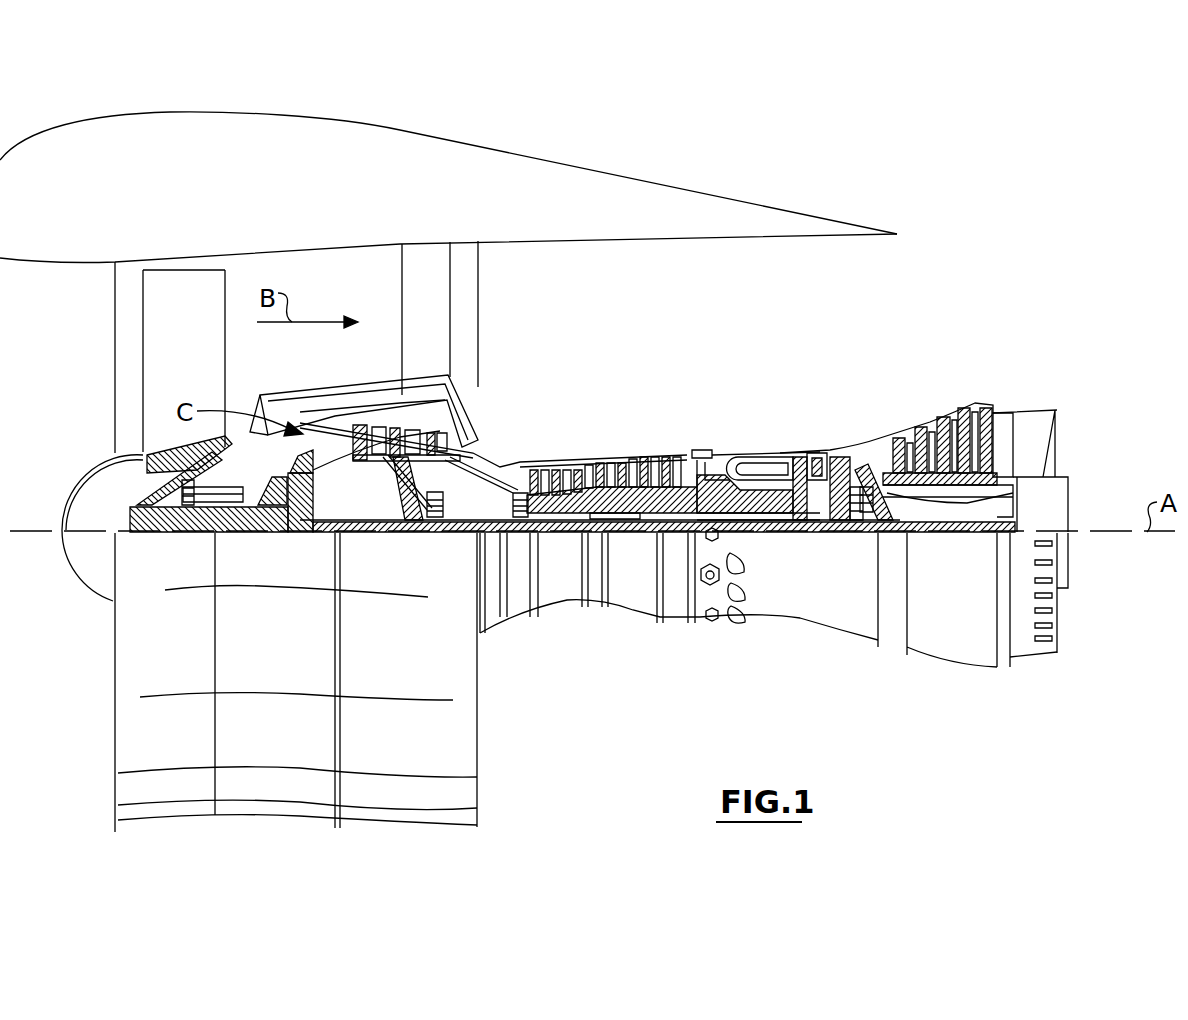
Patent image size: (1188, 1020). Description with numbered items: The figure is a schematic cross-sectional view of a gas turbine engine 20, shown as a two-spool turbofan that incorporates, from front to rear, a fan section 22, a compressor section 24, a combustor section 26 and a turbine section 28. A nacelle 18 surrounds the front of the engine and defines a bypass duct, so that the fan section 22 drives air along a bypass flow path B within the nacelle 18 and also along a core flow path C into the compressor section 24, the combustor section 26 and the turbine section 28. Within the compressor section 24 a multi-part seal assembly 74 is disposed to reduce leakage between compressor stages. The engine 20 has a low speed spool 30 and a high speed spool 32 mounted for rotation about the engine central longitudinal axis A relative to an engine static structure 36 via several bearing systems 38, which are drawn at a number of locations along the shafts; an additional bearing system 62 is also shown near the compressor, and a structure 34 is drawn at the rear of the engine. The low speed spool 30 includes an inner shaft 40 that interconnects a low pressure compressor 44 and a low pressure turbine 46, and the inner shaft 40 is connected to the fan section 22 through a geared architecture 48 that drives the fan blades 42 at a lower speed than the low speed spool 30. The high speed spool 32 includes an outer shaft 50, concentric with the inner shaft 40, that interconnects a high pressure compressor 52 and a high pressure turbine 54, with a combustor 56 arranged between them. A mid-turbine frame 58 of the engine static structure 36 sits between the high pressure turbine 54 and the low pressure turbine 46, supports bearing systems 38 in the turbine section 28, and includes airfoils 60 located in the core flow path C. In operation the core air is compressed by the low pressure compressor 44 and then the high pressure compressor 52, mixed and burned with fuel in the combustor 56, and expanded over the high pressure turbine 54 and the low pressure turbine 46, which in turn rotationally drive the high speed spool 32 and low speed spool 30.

The nacelle 18 is at (430, 158).
The gas turbine engine 20 is at (953, 167).
The fan section 22 is at (322, 221).
The compressor section 24 is at (728, 365).
The combustor section 26 is at (793, 365).
The turbine section 28 is at (1013, 365).
The low speed spool 30 is at (636, 536).
The high speed spool 32 is at (675, 497).
The engine static structure 34 is at (962, 502).
The engine static structure 36 is at (676, 621).
The bearing systems 38 is at (192, 510).
The inner shaft 40 is at (500, 535).
The fan blades 42 is at (200, 379).
The low pressure compressor 44 is at (410, 432).
The low pressure turbine 46 is at (937, 425).
The geared architecture 48 is at (302, 512).
The outer shaft 50 is at (750, 513).
The high pressure compressor 52 is at (620, 500).
The high pressure turbine 54 is at (835, 455).
The combustor 56 is at (750, 473).
The mid-turbine frame 58 is at (862, 442).
The airfoils 60 is at (883, 485).
The bearing systems 62 is at (448, 497).
The multi-part seal assembly 74 is at (608, 521).